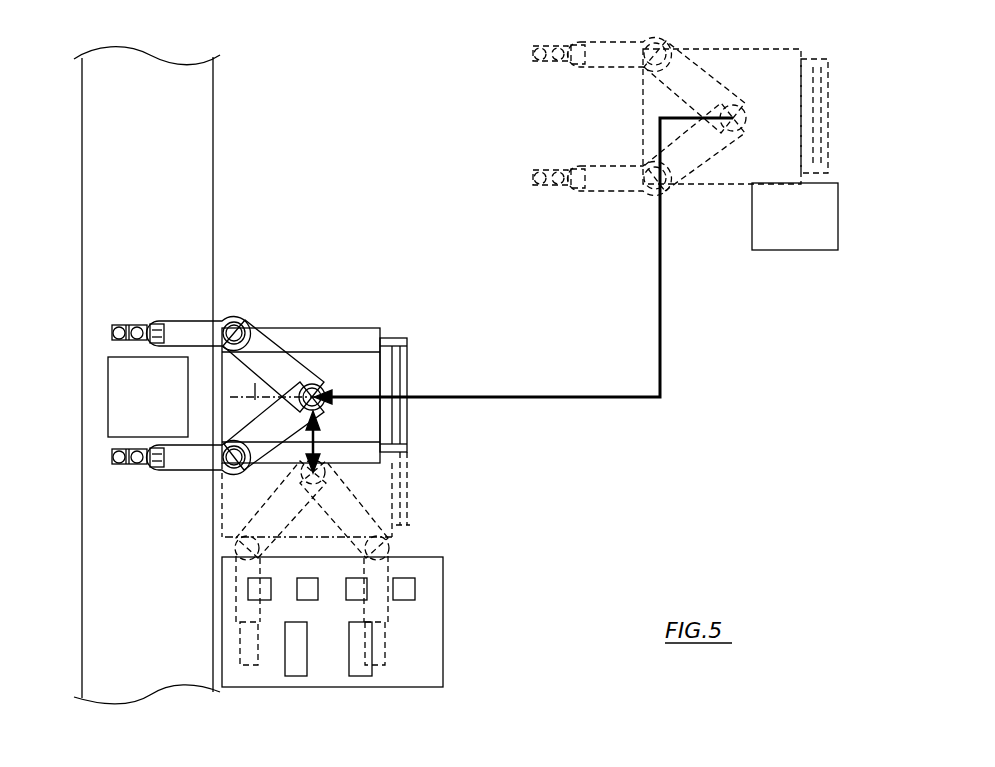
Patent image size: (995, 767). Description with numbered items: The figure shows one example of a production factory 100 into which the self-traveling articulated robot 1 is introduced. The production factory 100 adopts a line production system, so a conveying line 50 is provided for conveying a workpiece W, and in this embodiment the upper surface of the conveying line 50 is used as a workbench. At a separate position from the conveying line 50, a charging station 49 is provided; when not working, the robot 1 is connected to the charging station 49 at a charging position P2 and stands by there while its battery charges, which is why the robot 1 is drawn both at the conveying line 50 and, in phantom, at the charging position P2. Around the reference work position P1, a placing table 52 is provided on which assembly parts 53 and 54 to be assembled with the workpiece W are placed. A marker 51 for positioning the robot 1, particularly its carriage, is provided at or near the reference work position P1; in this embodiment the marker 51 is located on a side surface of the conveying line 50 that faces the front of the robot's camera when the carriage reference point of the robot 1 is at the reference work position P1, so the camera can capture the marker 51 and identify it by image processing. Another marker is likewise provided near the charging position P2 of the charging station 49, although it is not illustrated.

The production factory 100 is at (342, 108).
The conveying line 50 is at (213, 222).
The robot 1 is at (414, 320).
The workpiece W is at (108, 393).
The marker 51 is at (212, 490).
The placing table 52 is at (443, 650).
The assembly part 53 is at (415, 590).
The assembly part 54 is at (355, 676).
The charging station 49 is at (768, 250).
The reference work position P1 is at (321, 318).
The charging position P2 is at (632, 112).